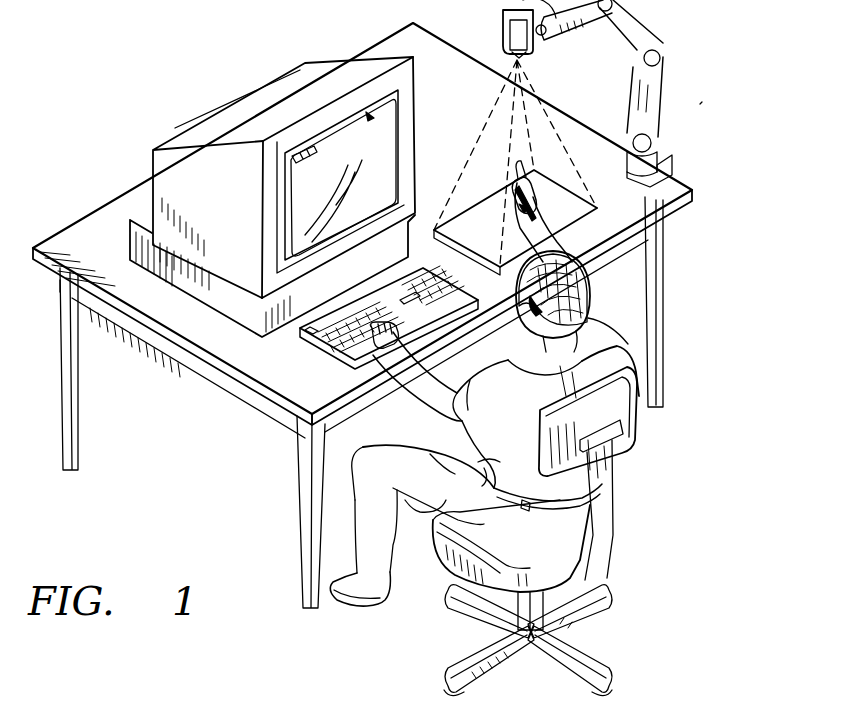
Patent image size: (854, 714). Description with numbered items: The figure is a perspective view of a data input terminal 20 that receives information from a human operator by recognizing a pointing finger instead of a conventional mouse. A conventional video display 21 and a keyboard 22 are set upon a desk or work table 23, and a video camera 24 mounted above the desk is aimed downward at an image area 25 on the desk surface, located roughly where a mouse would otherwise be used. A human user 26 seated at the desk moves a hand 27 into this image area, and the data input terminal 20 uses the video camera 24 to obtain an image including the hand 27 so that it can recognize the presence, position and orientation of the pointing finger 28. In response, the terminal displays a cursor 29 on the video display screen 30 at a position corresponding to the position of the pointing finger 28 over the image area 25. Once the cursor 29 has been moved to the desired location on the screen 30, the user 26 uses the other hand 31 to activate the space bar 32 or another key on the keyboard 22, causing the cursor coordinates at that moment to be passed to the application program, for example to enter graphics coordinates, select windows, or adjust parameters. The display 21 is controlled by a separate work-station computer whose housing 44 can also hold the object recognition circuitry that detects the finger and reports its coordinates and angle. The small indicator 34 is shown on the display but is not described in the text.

The data input terminal 20 is at (705, 100).
The video display 21 is at (192, 110).
The keyboard 22 is at (340, 358).
The desk or work table 23 is at (205, 348).
The video camera 24 is at (502, 28).
The image area 25 is at (472, 218).
The human user 26 is at (628, 352).
The user's hand 27 is at (548, 212).
The pointing finger 28 is at (528, 196).
The cursor 29 is at (372, 112).
The video display screen 30 is at (345, 138).
The other hand 31 is at (378, 340).
The space bar 32 is at (412, 300).
The indicator 34 is at (300, 142).
The housing 44 is at (135, 248).